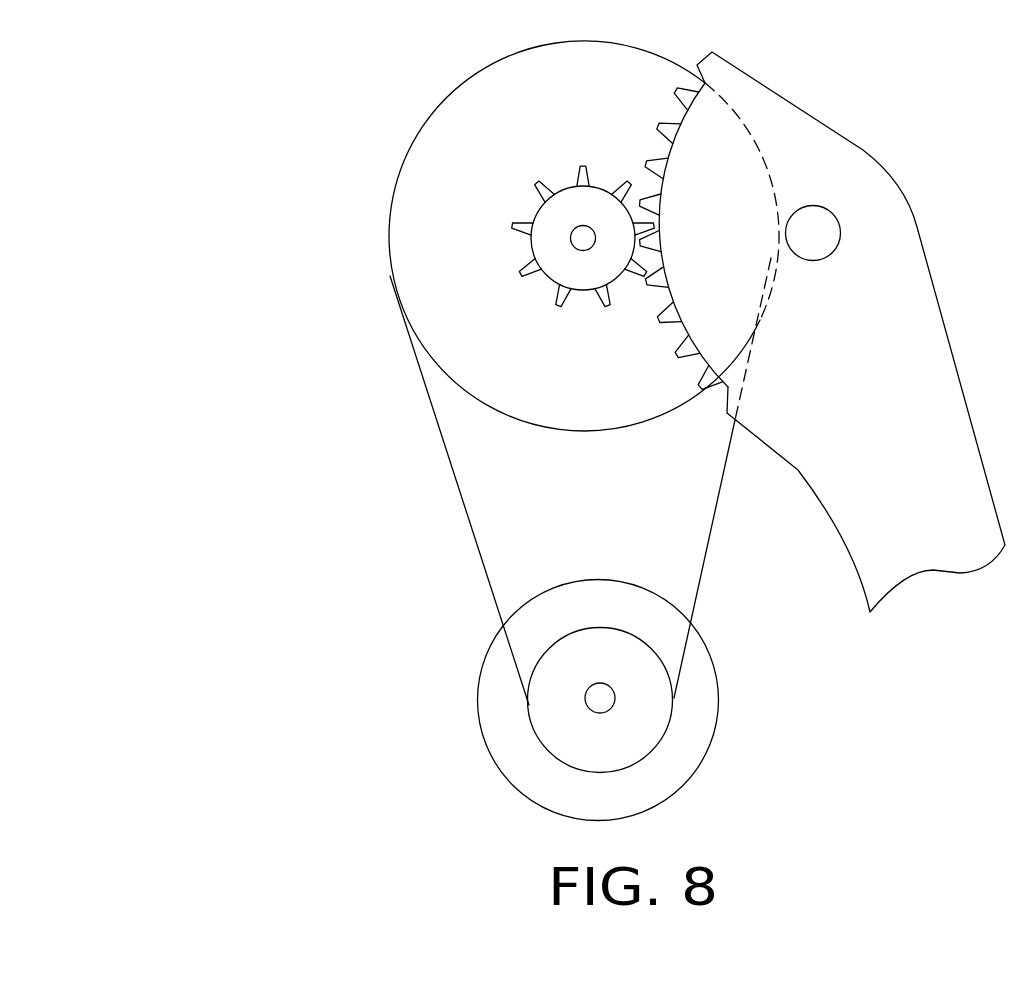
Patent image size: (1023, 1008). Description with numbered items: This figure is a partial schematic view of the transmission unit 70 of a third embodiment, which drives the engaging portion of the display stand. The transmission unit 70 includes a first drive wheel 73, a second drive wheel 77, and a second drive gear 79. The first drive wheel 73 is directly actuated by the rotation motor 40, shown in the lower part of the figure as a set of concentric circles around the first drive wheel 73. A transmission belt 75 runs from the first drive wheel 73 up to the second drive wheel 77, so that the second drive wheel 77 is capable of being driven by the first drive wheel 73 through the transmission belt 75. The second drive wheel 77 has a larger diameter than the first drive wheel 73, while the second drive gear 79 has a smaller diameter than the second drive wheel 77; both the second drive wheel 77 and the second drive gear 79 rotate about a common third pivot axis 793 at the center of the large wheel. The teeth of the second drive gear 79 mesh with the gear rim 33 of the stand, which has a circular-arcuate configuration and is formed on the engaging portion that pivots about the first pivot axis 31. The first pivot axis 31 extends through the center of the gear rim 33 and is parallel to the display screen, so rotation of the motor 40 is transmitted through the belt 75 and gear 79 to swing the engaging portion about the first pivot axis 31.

The driving mechanism 70 is at (312, 135).
The second drive wheel 77 is at (432, 240).
The second drive gear 79 is at (570, 212).
The third pivot axis 793 is at (575, 240).
The transmission belt 75 is at (470, 527).
The rotation motor 40 is at (507, 688).
The first drive wheel 73 is at (582, 720).
The gear rim 33 is at (676, 173).
The first pivot axis 31 is at (812, 233).